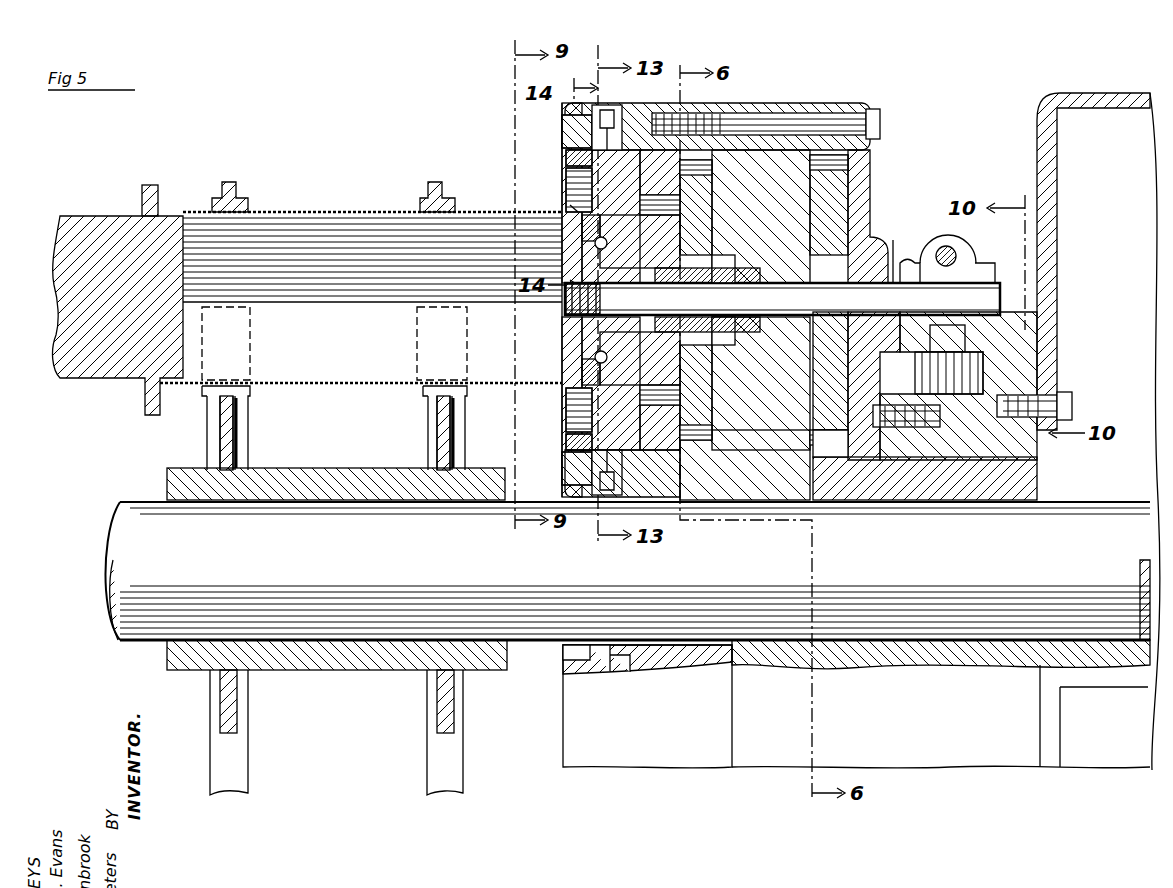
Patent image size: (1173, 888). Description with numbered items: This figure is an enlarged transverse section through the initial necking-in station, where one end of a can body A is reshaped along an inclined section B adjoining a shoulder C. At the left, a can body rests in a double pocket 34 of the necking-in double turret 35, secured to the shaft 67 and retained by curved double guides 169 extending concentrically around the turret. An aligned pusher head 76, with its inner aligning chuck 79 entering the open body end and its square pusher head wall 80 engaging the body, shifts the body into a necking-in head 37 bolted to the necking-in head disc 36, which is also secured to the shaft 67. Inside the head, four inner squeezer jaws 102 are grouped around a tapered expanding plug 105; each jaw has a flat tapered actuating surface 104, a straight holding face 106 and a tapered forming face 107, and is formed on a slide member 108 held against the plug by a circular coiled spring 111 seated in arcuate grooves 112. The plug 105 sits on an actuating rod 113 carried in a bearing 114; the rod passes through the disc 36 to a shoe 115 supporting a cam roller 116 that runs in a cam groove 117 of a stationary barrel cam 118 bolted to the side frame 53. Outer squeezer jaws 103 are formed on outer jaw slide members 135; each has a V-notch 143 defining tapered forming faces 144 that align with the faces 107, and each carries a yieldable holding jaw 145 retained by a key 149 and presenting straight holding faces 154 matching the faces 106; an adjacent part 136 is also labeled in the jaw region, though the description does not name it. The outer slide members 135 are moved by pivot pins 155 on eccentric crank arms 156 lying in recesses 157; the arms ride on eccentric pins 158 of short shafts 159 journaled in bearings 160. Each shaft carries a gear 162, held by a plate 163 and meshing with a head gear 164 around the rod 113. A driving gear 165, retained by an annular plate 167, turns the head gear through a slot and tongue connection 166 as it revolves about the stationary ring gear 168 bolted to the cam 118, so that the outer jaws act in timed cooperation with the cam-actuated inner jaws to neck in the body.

The double pocket 34 is at (264, 388).
The necking-in double turret 35 is at (318, 473).
The necking-in head disc 36 is at (772, 480).
The necking-in head 37 is at (715, 105).
The side frame 53 is at (1098, 431).
The shaft 67 is at (628, 571).
The pusher head 76 is at (100, 368).
The inner aligning chuck 79 is at (176, 347).
The pusher head wall 80 is at (160, 188).
The inner squeezer jaw 102 is at (575, 538).
The outer squeezer jaw 103 is at (563, 140).
The tapered actuating surface 104 is at (580, 336).
The expanding plug 105 is at (578, 322).
The holding face 106 is at (576, 236).
The tapered forming face 107 is at (574, 222).
The slide member 108 is at (600, 110).
The circular coiled spring 111 is at (610, 356).
The arcuate groove 112 is at (598, 362).
The actuating rod 113 is at (893, 290).
The bearing 114 is at (648, 312).
The shoe 115 is at (965, 270).
The cam roller 116 is at (928, 376).
The cam groove 117 is at (1012, 360).
The barrel cam 118 is at (1048, 366).
The outer jaw slide member 135 is at (563, 122).
The washer 136 is at (570, 426).
The V-notch 143 is at (572, 388).
The tapered forming face 144 is at (568, 204).
The yieldable holding jaw 145 is at (575, 186).
The key 149 is at (570, 165).
The straight holding face 154 is at (578, 200).
The pivot pin 155 is at (612, 140).
The eccentric crank arm 156 is at (662, 158).
The recess 157 is at (616, 120).
The eccentric pin 158 is at (612, 243).
The short shaft 159 is at (659, 300).
The bearing 160 is at (664, 196).
The gear 162 is at (690, 212).
The plate 163 is at (716, 178).
The head gear 164 is at (735, 255).
The driving gear 165 is at (840, 185).
The slot and tongue connection 166 is at (760, 270).
The annular plate 167 is at (860, 200).
The ring gear 168 is at (830, 460).
The curved double guide 169 is at (236, 198).
The can body A is at (334, 343).
The inclined section B is at (574, 384).
The shoulder C is at (570, 406).